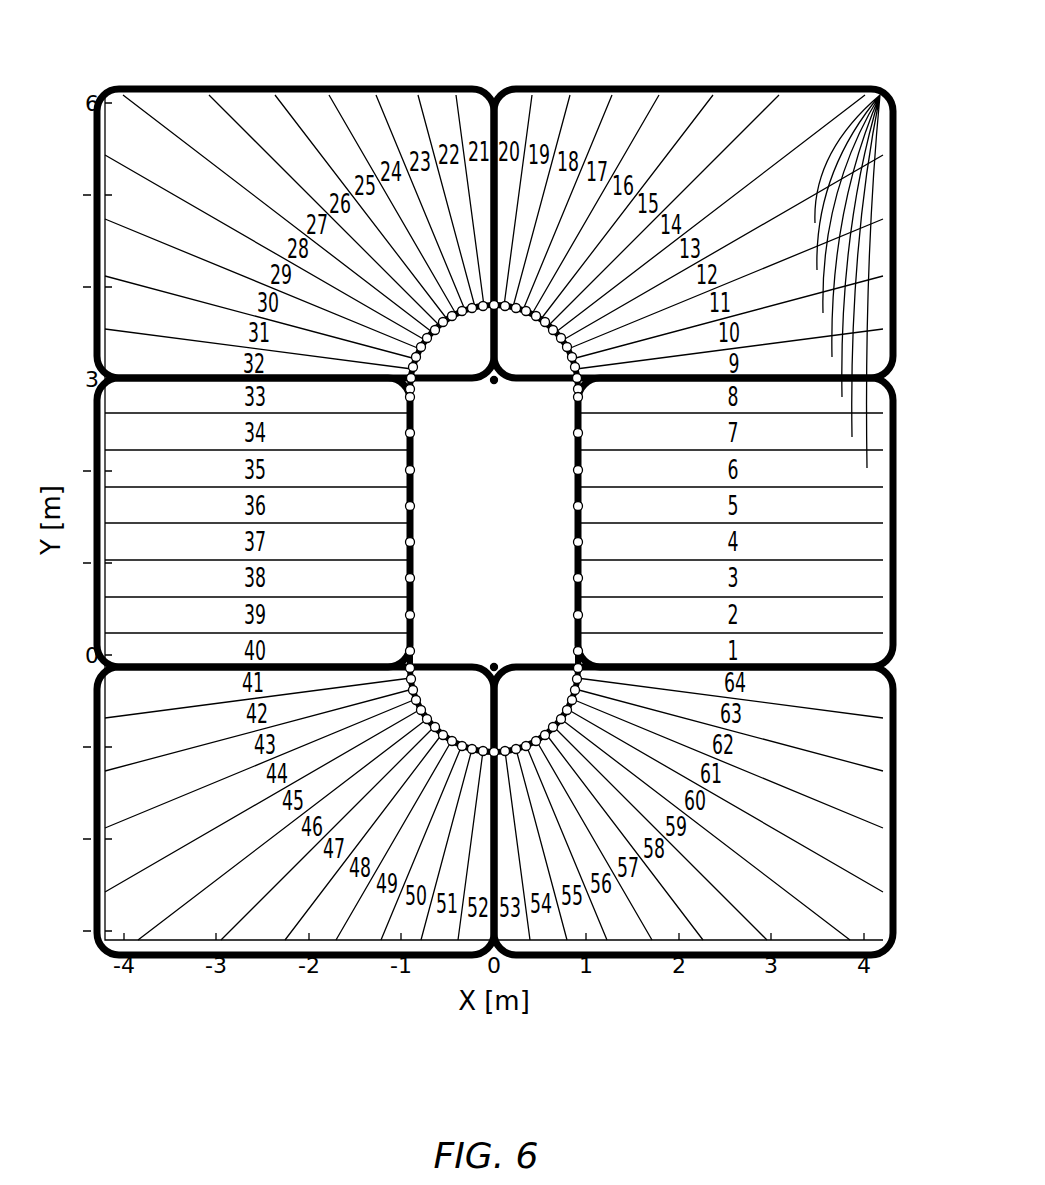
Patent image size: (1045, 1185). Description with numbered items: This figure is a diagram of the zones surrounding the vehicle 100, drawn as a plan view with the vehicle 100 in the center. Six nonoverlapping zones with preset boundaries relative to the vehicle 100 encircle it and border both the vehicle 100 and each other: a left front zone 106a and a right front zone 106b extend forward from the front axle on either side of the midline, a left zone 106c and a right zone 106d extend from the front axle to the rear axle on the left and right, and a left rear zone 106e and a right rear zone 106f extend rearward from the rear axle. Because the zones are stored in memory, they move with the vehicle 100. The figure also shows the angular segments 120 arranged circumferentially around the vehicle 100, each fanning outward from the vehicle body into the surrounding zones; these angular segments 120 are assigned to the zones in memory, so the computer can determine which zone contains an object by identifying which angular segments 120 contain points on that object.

The vehicle 100 is at (477, 537).
The left front zone 106a is at (236, 86).
The right front zone 106b is at (757, 86).
The left zone 106c is at (94, 465).
The right zone 106d is at (896, 465).
The left rear zone 106e is at (257, 960).
The right rear zone 106f is at (737, 960).
The angular segments 120 is at (882, 93).